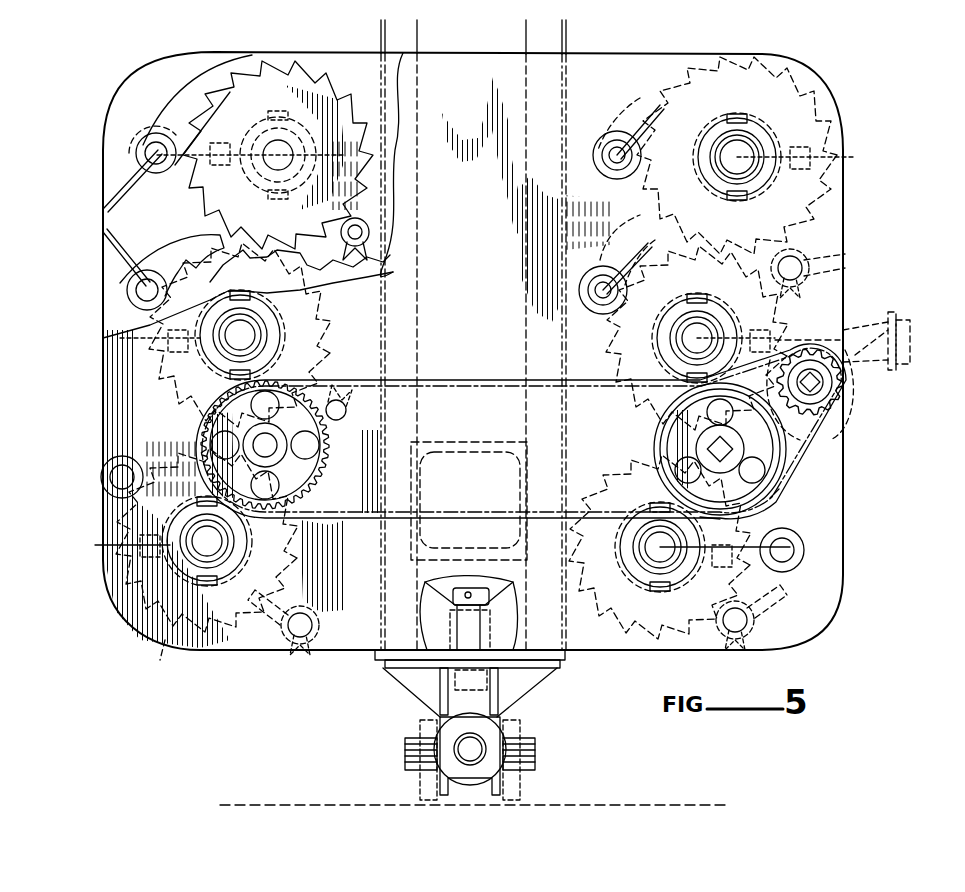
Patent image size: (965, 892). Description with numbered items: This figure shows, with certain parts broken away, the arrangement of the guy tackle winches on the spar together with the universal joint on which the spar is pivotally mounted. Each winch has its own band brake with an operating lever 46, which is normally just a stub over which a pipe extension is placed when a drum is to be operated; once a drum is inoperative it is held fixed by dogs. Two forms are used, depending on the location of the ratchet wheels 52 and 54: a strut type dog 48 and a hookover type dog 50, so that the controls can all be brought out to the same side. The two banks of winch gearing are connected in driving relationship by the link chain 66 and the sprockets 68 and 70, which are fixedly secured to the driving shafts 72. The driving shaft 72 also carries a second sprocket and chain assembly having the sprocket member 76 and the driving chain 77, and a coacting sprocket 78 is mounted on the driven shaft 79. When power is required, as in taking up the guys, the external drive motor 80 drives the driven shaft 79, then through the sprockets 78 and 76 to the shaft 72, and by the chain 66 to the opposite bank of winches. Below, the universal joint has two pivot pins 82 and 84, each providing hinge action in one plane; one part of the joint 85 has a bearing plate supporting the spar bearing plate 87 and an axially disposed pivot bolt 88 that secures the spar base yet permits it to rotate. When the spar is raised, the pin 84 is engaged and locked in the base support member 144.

The operating lever 46 is at (848, 258).
The strut type dog 48 is at (188, 122).
The hookover type dog 50 is at (182, 250).
The ratchet wheel 52 is at (300, 103).
The ratchet wheel 54 is at (270, 272).
The link chain 66 is at (470, 379).
The sprocket 68 is at (308, 482).
The sprocket 70 is at (759, 439).
The driving shaft 72 is at (268, 442).
The sprocket member 76 is at (768, 492).
The driving chain 77 is at (800, 458).
The coacting sprocket 78 is at (815, 427).
The driven shaft 79 is at (824, 384).
The external drive motor 80 is at (868, 335).
The pivot pin 82 is at (456, 743).
The pivot pin 84 is at (535, 756).
The universal joint part 85 is at (420, 680).
The spar bearing plate 87 is at (378, 654).
The pivot bolt 88 is at (468, 632).
The base support member 144 is at (420, 792).